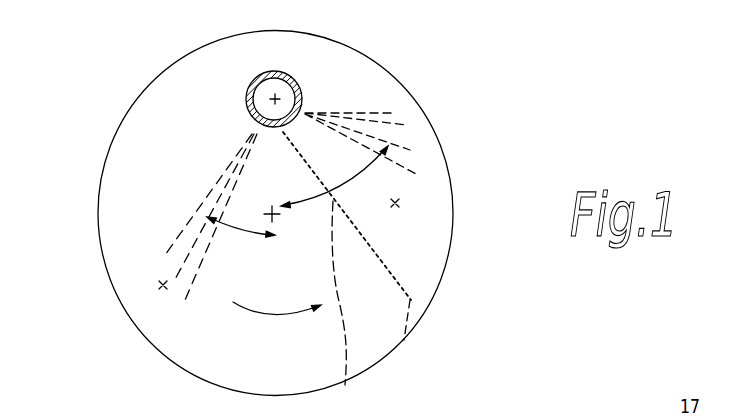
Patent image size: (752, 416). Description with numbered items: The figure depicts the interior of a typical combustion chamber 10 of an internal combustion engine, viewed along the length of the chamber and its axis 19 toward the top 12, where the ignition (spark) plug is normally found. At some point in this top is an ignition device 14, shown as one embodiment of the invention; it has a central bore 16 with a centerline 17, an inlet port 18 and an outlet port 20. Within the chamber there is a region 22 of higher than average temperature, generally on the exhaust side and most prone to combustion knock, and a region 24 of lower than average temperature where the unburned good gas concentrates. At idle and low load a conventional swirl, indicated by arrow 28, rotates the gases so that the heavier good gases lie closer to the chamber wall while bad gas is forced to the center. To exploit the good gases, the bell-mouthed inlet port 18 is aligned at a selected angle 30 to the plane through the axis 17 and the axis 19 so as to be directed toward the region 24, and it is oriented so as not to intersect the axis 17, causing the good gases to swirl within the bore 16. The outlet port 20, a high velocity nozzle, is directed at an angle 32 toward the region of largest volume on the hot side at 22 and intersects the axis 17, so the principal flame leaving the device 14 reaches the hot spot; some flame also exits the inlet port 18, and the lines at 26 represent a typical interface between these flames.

The combustion chamber 10 is at (452, 181).
The top of the combustion chamber 12 is at (217, 330).
The ignition device 14 is at (301, 76).
The central bore 16 is at (290, 76).
The centerline 17 is at (275, 99).
The inlet port 18 is at (313, 113).
The axis 19 is at (273, 212).
The outlet port 20 is at (255, 128).
The region of higher temperature 22 is at (163, 285).
The region of lower temperature 24 is at (398, 204).
The flame interface lines 26 is at (408, 302).
The conventional swirl arrow 28 is at (282, 315).
The selected angle of inlet port 30 is at (319, 201).
The angle of outlet port 32 is at (244, 234).